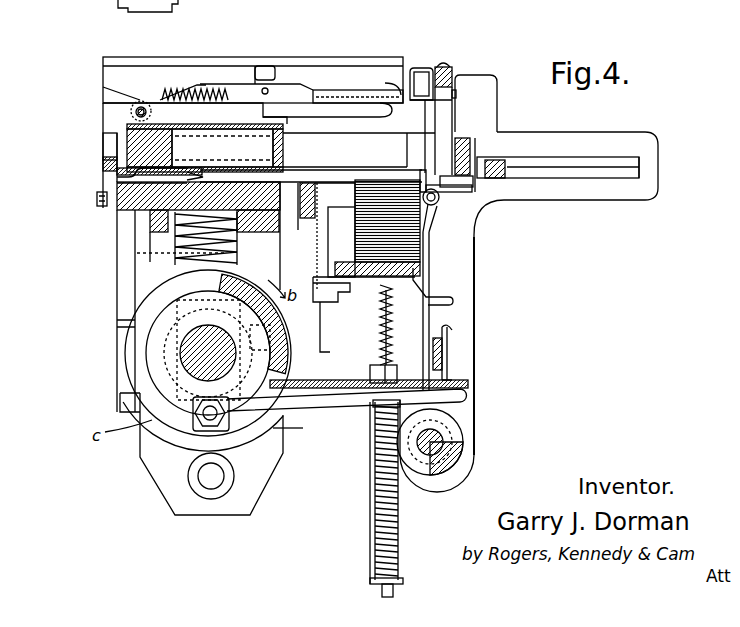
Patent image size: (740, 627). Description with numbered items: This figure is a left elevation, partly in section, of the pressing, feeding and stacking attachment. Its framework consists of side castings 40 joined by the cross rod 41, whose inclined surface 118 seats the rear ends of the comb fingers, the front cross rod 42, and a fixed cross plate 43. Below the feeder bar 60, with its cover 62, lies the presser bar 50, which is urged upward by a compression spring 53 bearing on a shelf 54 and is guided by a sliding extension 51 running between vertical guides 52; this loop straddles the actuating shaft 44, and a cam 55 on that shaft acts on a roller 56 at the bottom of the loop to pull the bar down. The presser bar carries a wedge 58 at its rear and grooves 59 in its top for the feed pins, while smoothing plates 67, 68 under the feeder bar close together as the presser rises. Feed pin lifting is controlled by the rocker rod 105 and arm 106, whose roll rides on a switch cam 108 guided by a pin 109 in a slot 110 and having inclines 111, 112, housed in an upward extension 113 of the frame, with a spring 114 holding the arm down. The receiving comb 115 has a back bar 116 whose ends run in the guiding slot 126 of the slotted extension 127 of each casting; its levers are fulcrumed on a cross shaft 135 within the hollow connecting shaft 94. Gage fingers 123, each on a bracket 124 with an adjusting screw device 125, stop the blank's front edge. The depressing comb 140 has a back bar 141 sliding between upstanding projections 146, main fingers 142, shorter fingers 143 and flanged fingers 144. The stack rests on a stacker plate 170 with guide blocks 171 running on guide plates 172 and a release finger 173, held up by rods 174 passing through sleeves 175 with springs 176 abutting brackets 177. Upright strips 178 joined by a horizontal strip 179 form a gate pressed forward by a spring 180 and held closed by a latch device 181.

The side castings 40 is at (455, 225).
The cross rod 41 is at (288, 218).
The cross rod 42 is at (463, 135).
The cross plate 43 is at (460, 381).
The actuating shaft 44 is at (183, 350).
The presser bar 50 is at (112, 211).
The sliding extension 51 is at (148, 273).
The vertical guides 52 is at (125, 293).
The spring 53 is at (177, 253).
The shelf 54 is at (122, 323).
The cam 55 is at (250, 430).
The roller 56 is at (220, 492).
The wedge or cam 58 is at (100, 157).
The grooves 59 is at (98, 197).
The feeder bar 60 is at (113, 143).
The cover 62 is at (110, 125).
The smoothing plate 67 is at (283, 166).
The smoothing plate 68 is at (132, 178).
The hollow connecting shaft 94 is at (463, 433).
The rocker rod 105 is at (133, 112).
The control arm 106 is at (171, 85).
The switch cam 108 is at (240, 86).
The pin 109 is at (268, 88).
The slot 110 is at (265, 70).
The rearward incline 111 is at (314, 88).
The incline 112 is at (197, 83).
The upward extension 113 is at (378, 57).
The spring 114 is at (211, 89).
The receiving comb 115 is at (411, 181).
The back bar 116 is at (505, 160).
The inclined surface 118 is at (308, 189).
The gage finger 123 is at (426, 165).
The bracket 124 is at (472, 185).
The adjusting screw device 125 is at (440, 200).
The guiding slot 126 is at (623, 167).
The slotted extension 127 is at (558, 158).
The cross shaft 135 is at (463, 452).
The depressing comb 140 is at (395, 106).
The back bar 141 is at (453, 66).
The fingers 142 is at (456, 94).
The shorter fingers 143 is at (423, 68).
The special fingers 144 is at (396, 90).
The upstanding projections 146 is at (486, 78).
The stacker plate 170 is at (425, 268).
The guide block 171 is at (342, 296).
The guide plate 172 is at (320, 257).
The finger 173 is at (458, 302).
The rods 174 is at (393, 313).
The sleeves 175 is at (397, 373).
The springs 176 is at (396, 336).
The brackets 177 is at (368, 508).
The strips 178 is at (432, 258).
The horizontal strip 179 is at (445, 347).
The spring 180 is at (514, 346).
The latch device 181 is at (449, 330).